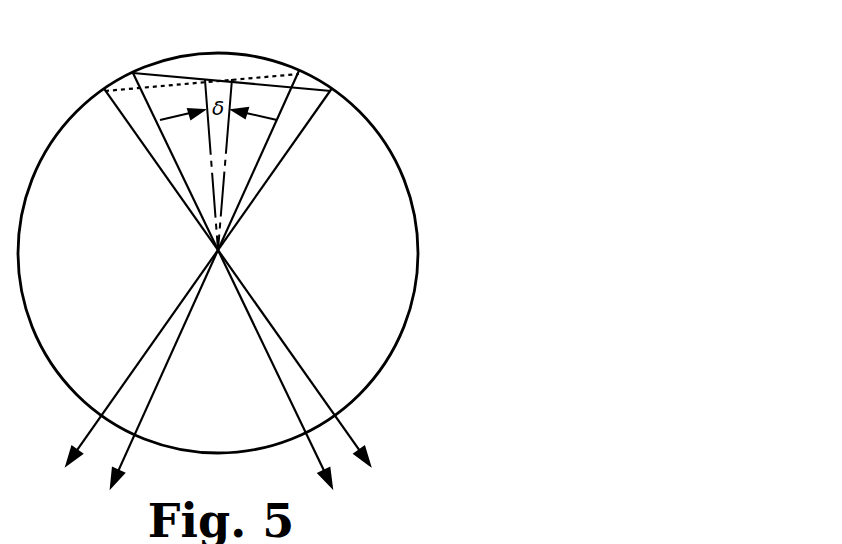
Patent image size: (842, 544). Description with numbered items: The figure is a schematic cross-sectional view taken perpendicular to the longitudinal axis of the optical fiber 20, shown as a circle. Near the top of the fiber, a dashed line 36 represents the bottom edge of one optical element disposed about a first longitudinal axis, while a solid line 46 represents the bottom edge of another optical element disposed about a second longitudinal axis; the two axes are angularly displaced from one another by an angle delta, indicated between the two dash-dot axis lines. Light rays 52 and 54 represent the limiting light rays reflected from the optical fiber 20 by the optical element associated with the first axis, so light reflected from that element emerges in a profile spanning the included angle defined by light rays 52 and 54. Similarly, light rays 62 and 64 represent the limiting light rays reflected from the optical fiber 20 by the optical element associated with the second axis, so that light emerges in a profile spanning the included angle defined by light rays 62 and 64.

The optical fiber 20 is at (440, 218).
The dashed line 36 is at (273, 75).
The solid line 46 is at (310, 90).
The light ray 52 is at (162, 382).
The light ray 54 is at (302, 366).
The light ray 62 is at (140, 363).
The light ray 64 is at (273, 380).